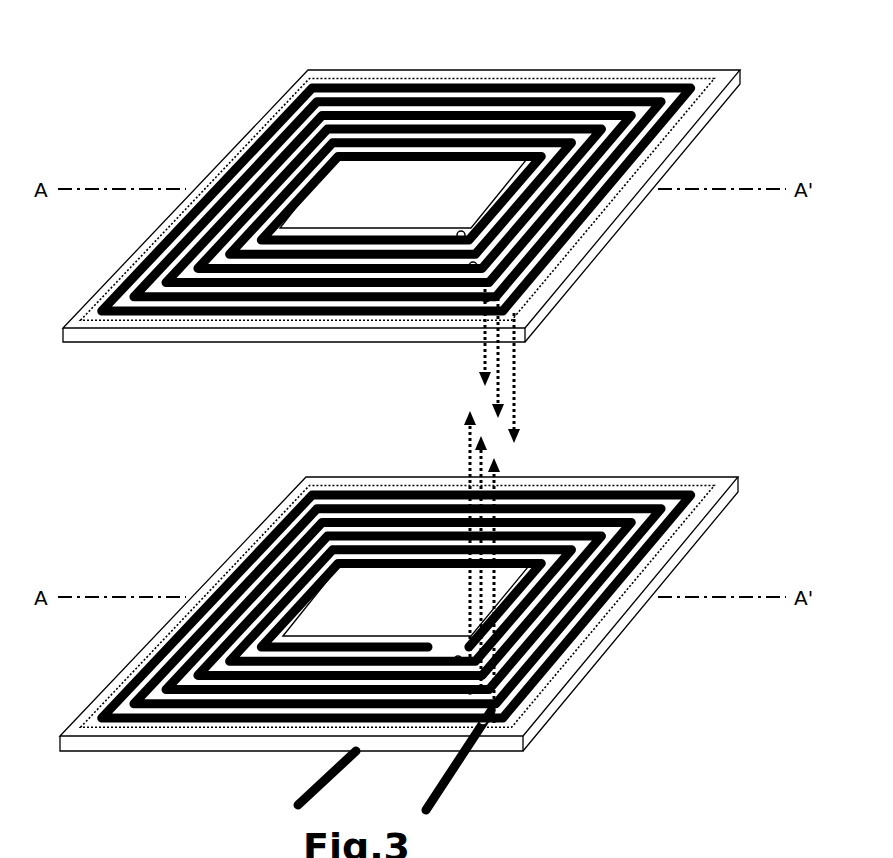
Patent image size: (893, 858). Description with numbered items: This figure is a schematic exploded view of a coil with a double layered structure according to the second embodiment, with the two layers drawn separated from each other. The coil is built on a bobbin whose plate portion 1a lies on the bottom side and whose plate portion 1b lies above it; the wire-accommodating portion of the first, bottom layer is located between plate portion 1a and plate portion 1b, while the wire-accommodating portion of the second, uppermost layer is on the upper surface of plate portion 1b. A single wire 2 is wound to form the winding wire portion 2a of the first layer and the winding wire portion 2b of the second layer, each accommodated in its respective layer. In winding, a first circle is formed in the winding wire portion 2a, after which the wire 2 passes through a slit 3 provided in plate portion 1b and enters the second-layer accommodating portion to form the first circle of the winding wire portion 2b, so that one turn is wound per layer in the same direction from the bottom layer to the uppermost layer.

The plate portion 1a is at (430, 593).
The plate portion 1b is at (430, 183).
The wire 2 is at (398, 363).
The winding wire portion of the first layer 2a is at (546, 477).
The winding wire portion of the second layer 2b is at (479, 67).
The slit 3 is at (513, 344).